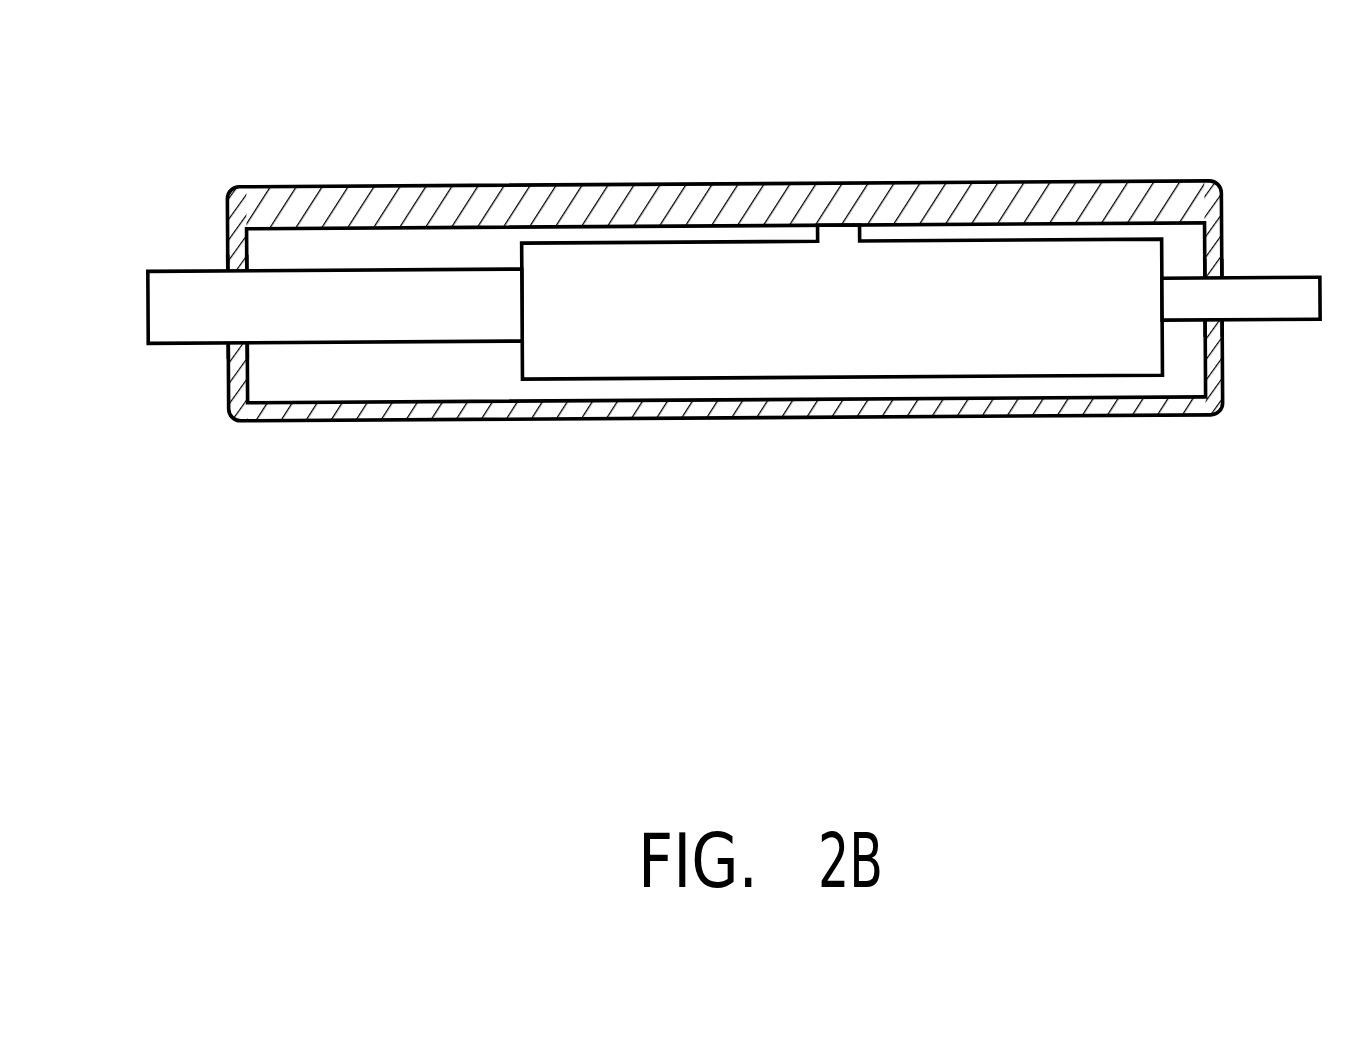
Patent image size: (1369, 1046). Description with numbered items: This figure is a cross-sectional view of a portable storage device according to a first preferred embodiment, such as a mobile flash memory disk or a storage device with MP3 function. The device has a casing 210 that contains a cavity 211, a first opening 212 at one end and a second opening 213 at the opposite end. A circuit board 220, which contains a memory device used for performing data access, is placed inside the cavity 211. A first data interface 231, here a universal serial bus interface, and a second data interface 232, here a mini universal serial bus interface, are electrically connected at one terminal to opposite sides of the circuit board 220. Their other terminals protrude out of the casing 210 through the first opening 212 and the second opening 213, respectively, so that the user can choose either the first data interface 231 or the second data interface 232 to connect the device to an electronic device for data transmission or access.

The casing 210 is at (1108, 205).
The cavity 211 is at (1180, 377).
The first opening 212 is at (227, 268).
The second opening 213 is at (1222, 268).
The circuit board 220 is at (857, 327).
The first data interface 231 is at (192, 318).
The second data interface 232 is at (1310, 305).